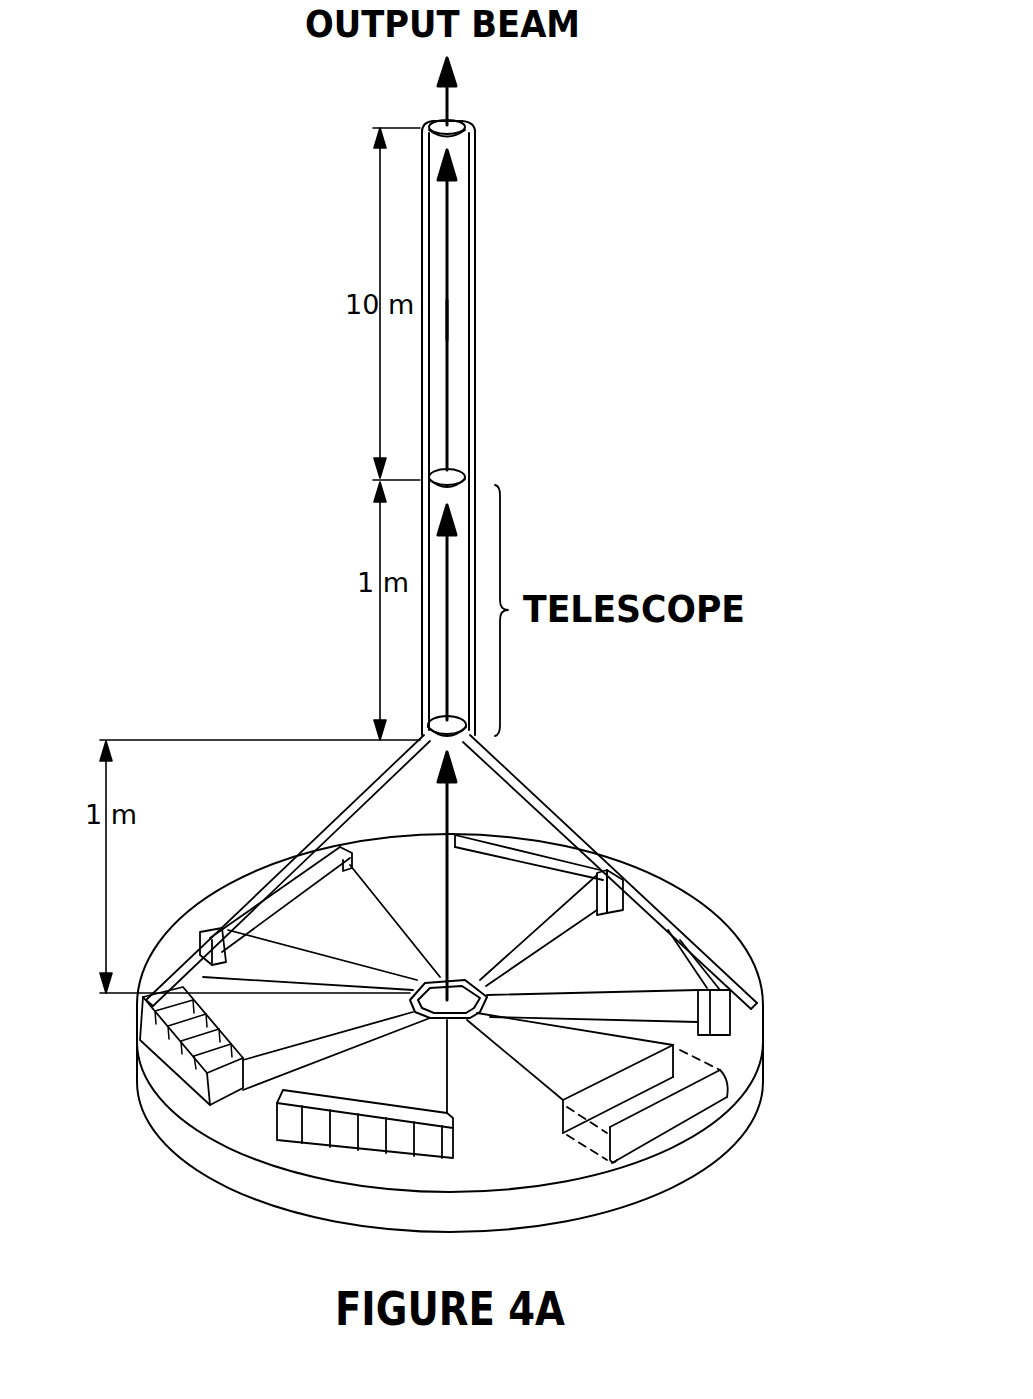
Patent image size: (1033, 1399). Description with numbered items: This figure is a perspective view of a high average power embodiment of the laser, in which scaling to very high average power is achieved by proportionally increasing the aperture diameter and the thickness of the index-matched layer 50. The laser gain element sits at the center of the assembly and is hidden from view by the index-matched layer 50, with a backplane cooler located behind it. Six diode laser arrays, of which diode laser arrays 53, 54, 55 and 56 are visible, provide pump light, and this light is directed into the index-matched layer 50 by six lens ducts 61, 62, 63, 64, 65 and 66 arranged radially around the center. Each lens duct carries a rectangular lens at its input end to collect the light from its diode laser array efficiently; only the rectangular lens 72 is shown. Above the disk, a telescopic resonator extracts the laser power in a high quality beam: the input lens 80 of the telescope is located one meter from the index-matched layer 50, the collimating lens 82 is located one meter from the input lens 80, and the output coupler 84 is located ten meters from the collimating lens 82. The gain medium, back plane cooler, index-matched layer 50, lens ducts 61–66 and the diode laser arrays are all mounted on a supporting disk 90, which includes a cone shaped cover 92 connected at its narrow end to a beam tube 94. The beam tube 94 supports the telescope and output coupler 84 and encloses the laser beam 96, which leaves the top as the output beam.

The index-matched layer 50 is at (330, 832).
The diode laser array 53 is at (763, 1020).
The diode laser array 54 is at (615, 893).
The diode laser array 55 is at (203, 950).
The diode laser array 56 is at (260, 1075).
The lens duct 61 is at (450, 1097).
The lens duct 62 is at (557, 1115).
The lens duct 63 is at (670, 967).
The lens duct 64 is at (547, 877).
The lens duct 65 is at (310, 895).
The lens duct 66 is at (258, 1078).
The rectangular lens 72 is at (683, 1113).
The input lens 80 is at (468, 730).
The collimating lens 82 is at (462, 472).
The output coupler 84 is at (462, 122).
The supporting disk 90 is at (324, 1200).
The cone shaped cover 92 is at (362, 790).
The beam tube 94 is at (476, 372).
The laser beam 96 is at (448, 330).